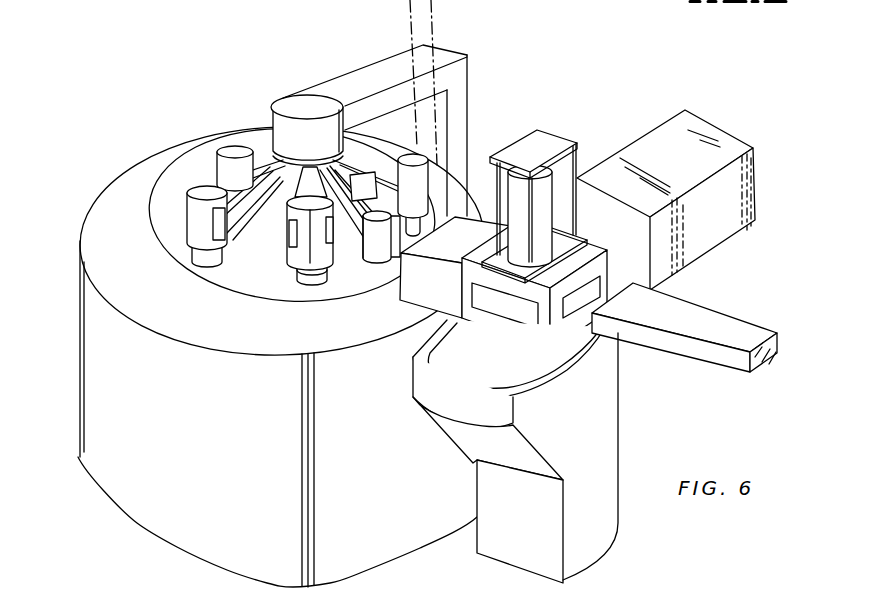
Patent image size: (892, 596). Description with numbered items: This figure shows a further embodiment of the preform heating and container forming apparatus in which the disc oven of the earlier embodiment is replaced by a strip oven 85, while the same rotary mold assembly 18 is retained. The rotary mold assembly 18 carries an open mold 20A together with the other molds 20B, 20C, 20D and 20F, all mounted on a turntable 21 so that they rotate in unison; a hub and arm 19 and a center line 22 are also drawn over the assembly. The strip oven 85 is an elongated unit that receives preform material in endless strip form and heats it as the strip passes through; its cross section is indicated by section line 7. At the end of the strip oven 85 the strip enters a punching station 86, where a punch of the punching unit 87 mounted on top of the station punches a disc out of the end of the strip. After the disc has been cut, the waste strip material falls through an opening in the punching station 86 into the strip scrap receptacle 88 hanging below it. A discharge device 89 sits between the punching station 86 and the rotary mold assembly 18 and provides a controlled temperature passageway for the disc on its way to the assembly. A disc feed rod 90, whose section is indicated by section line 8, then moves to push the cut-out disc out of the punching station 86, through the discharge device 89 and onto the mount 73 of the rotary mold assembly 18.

The rotary mold assembly 18 is at (93, 304).
The hub and arm 19 is at (430, 50).
The open mold 20A is at (440, 215).
The mold 20B is at (282, 268).
The mold 20C is at (187, 212).
The mold 20D is at (258, 111).
The mold 20F is at (403, 156).
The turntable 21 is at (193, 165).
The axis line 22 is at (440, 25).
The mount 73 is at (310, 279).
The strip oven 85 is at (723, 140).
The punching station 86 is at (530, 337).
The punching unit 87 is at (540, 140).
The strip scrap receptacle 88 is at (432, 387).
The discharge device 89 is at (438, 294).
The disc feed rod 90 is at (733, 317).
The section line 7- 7 is at (588, 132).
The section line 8- 8 is at (425, 240).